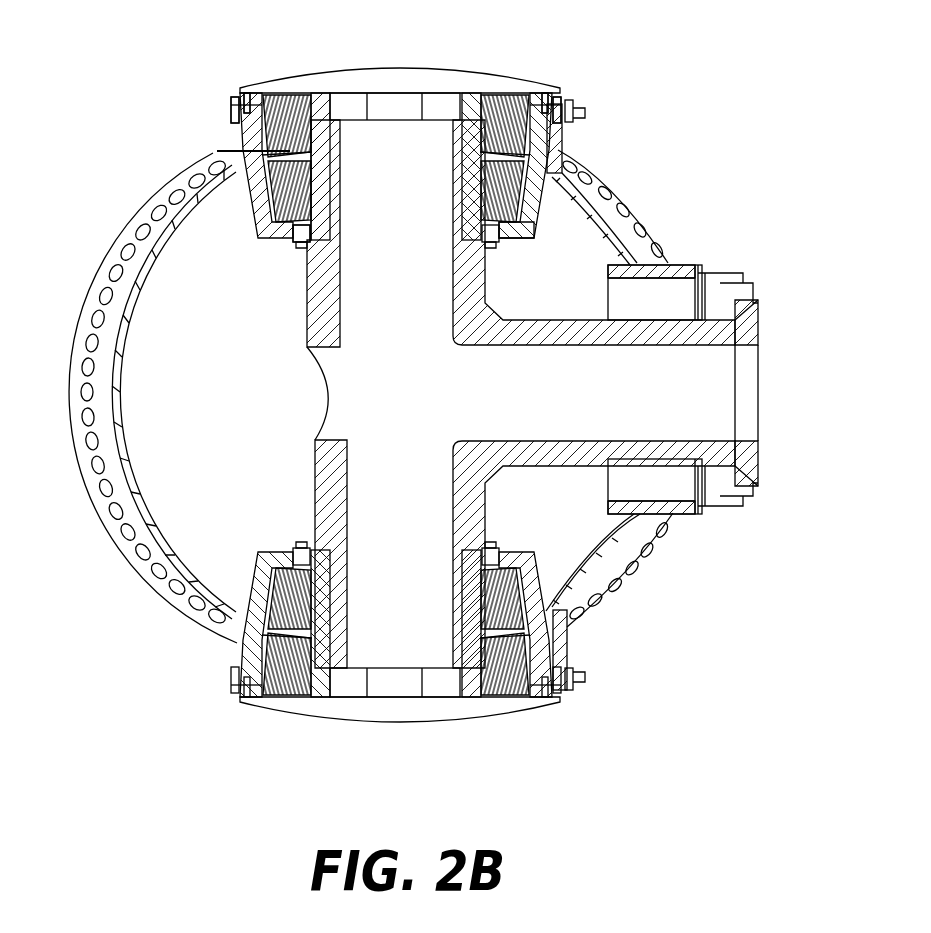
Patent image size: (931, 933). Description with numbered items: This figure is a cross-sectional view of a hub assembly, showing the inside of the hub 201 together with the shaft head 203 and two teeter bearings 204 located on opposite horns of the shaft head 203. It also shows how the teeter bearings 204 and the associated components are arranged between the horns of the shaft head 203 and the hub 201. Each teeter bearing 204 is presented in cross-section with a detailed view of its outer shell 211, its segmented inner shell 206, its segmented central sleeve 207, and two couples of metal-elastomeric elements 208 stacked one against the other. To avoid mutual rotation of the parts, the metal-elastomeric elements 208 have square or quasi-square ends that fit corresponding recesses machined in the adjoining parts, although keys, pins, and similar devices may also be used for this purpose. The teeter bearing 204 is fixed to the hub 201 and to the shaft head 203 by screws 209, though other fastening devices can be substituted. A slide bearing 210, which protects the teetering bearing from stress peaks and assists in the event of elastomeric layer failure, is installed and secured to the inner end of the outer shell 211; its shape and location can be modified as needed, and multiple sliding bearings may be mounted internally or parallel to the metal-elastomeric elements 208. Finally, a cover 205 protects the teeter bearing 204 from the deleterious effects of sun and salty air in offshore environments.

The hub 201 is at (133, 480).
The shaft head 203 is at (550, 347).
The teeter bearing 204 is at (527, 150).
The cover 205 is at (372, 66).
The segmented inner shell 206 is at (262, 88).
The segmented central sleeve 207 is at (217, 151).
The metal-elastomeric elements 208 is at (248, 117).
The screws 209 is at (463, 92).
The slide bearing 210 is at (295, 243).
The outer shell 211 is at (537, 207).